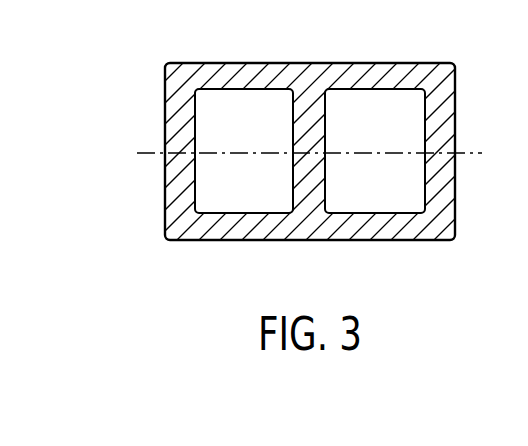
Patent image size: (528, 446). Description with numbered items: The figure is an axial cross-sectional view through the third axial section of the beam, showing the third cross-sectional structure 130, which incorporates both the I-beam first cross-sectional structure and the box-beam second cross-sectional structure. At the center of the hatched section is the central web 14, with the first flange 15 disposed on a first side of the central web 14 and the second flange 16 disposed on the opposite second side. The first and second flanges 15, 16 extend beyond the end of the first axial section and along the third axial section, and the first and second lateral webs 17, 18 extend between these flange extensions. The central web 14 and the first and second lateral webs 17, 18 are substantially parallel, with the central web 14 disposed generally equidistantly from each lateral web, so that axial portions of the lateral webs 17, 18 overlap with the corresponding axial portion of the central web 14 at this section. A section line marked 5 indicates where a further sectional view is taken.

The third cross-sectional structure 130 is at (209, 252).
The central web 14 is at (326, 177).
The first flange 15 is at (232, 212).
The second flange 16 is at (376, 90).
The first lateral web 17 is at (196, 114).
The second lateral web 18 is at (456, 218).
The section line 5- 5 is at (141, 153).